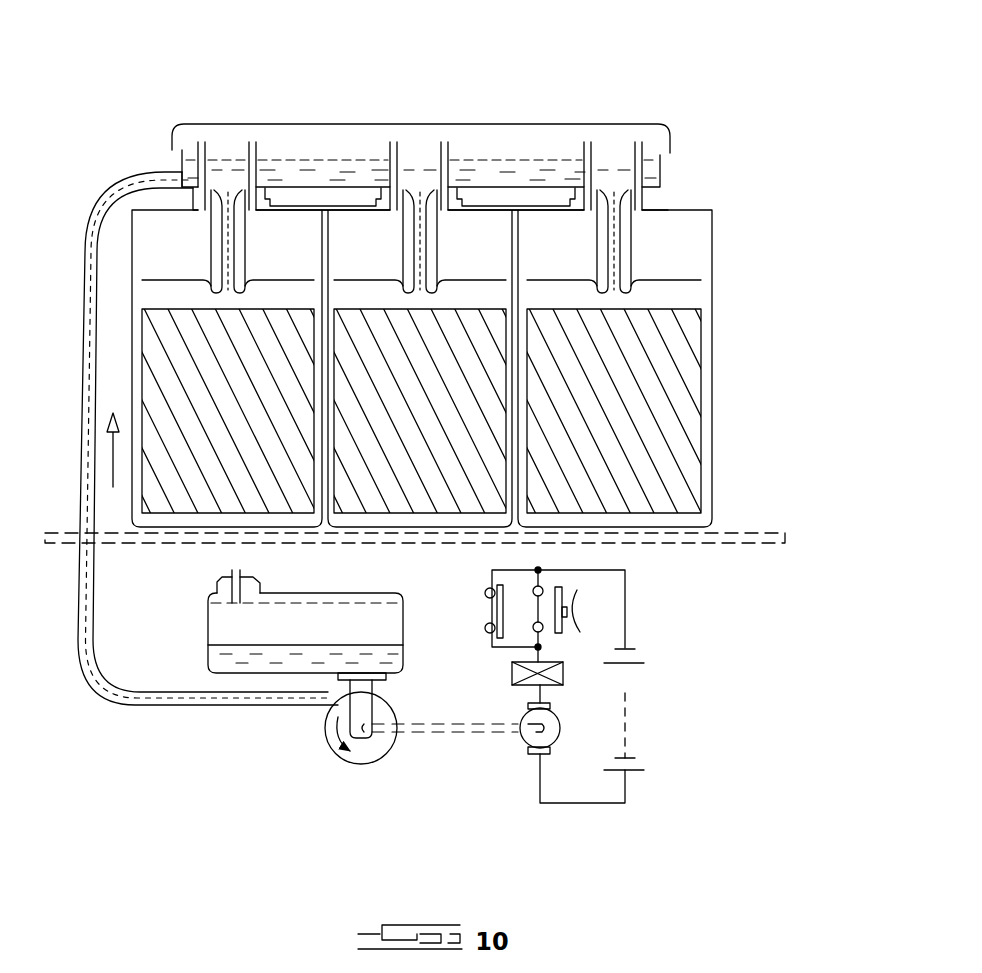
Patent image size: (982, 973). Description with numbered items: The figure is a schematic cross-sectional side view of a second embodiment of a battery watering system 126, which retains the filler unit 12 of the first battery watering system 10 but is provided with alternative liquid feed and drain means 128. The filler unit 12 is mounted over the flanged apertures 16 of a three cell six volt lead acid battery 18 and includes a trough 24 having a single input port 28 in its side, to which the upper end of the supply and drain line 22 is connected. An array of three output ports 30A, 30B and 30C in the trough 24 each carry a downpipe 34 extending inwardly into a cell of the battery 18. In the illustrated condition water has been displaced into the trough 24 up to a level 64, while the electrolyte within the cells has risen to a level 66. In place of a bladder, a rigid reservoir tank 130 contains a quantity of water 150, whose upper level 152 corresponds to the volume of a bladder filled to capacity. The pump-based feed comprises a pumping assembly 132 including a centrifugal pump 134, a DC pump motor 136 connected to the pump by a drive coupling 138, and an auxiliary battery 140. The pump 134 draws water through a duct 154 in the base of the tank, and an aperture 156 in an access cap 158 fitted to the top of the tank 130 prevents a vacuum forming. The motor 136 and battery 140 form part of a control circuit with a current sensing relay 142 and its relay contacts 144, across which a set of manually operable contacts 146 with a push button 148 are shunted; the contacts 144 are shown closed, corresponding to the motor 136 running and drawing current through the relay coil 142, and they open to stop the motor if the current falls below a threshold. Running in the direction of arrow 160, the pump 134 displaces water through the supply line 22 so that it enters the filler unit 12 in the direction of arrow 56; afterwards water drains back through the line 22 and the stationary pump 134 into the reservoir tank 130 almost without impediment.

The battery watering system 10 is at (80, 190).
The filler unit 12 is at (405, 106).
The flanged apertures 16 is at (182, 178).
The lead acid battery 18 is at (724, 403).
The supply and drain line 22 is at (85, 424).
The trough 24 is at (662, 172).
The input port 28 is at (178, 170).
The output port 30A is at (228, 176).
The output port 30B is at (419, 176).
The output port 30C is at (613, 176).
The downpipe 34 is at (246, 250).
The arrow 56 is at (113, 458).
The water level 64 is at (533, 158).
The electrolyte level 66 is at (174, 282).
The battery watering system 126 is at (105, 731).
The liquid feed and drain means 128 is at (297, 739).
The reservoir tank 130 is at (403, 598).
The pumping assembly 132 is at (490, 744).
The centrifugal pump 134 is at (356, 762).
The DC pump motor 136 is at (518, 738).
The drive coupling 138 is at (436, 733).
The auxiliary battery 140 is at (627, 712).
The current sensing relay 142 is at (563, 675).
The relay contacts 144 is at (485, 614).
The manually operable contacts 146 is at (560, 582).
The push button 148 is at (577, 590).
The water 150 is at (309, 655).
The upper level 152 is at (353, 603).
The duct 154 is at (390, 677).
The aperture 156 is at (240, 567).
The access cap 158 is at (218, 578).
The arrow 160 is at (327, 760).